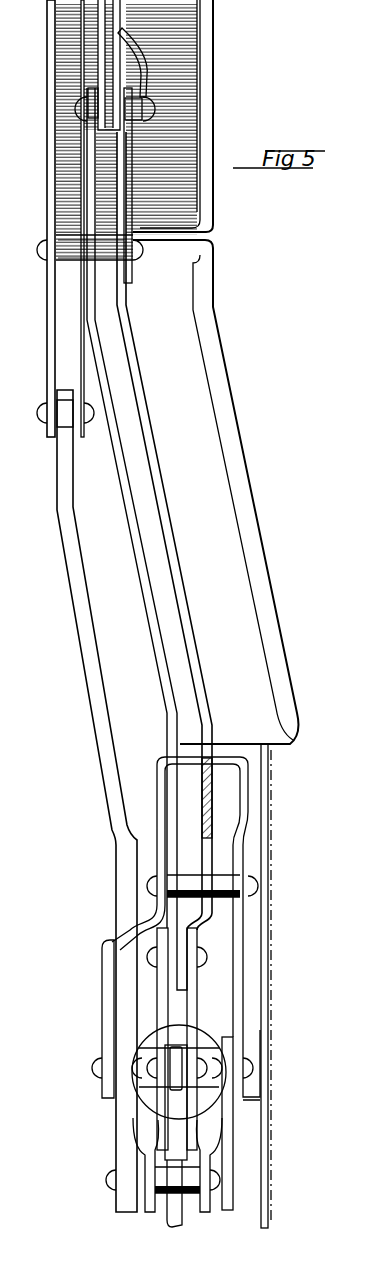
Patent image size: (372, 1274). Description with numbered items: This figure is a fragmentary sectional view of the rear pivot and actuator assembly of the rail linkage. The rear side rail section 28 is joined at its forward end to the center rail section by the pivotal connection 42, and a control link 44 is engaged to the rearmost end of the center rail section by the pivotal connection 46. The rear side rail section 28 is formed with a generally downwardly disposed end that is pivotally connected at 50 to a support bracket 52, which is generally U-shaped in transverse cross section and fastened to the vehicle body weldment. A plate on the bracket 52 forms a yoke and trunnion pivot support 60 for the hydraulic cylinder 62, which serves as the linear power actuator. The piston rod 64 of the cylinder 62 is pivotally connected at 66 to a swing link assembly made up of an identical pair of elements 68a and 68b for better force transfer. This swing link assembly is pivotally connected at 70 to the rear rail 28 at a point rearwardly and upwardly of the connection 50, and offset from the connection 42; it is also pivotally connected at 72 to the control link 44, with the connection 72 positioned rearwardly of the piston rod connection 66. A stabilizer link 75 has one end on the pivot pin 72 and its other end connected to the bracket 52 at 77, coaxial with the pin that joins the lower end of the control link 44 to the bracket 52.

The rear side rail section 28 is at (140, 553).
The pivotal connection 42 is at (144, 253).
The control link 44 is at (62, 527).
The pivotal connection 46 is at (40, 414).
The pivotal connection 50 is at (262, 885).
The support bracket 52 is at (262, 790).
The yoke and trunnion pivot support 60 is at (94, 1070).
The hydraulic cylinder 62 is at (178, 1107).
The piston rod 64 is at (180, 1108).
The pivotal connection 66 is at (205, 1062).
The swing link element 68a is at (162, 1003).
The swing link element 68b is at (193, 997).
The pivotal connection 70 is at (205, 960).
The pivotal connection 72 is at (108, 1180).
The stabilizer link 75 is at (215, 1205).
The connection 77 is at (256, 1068).